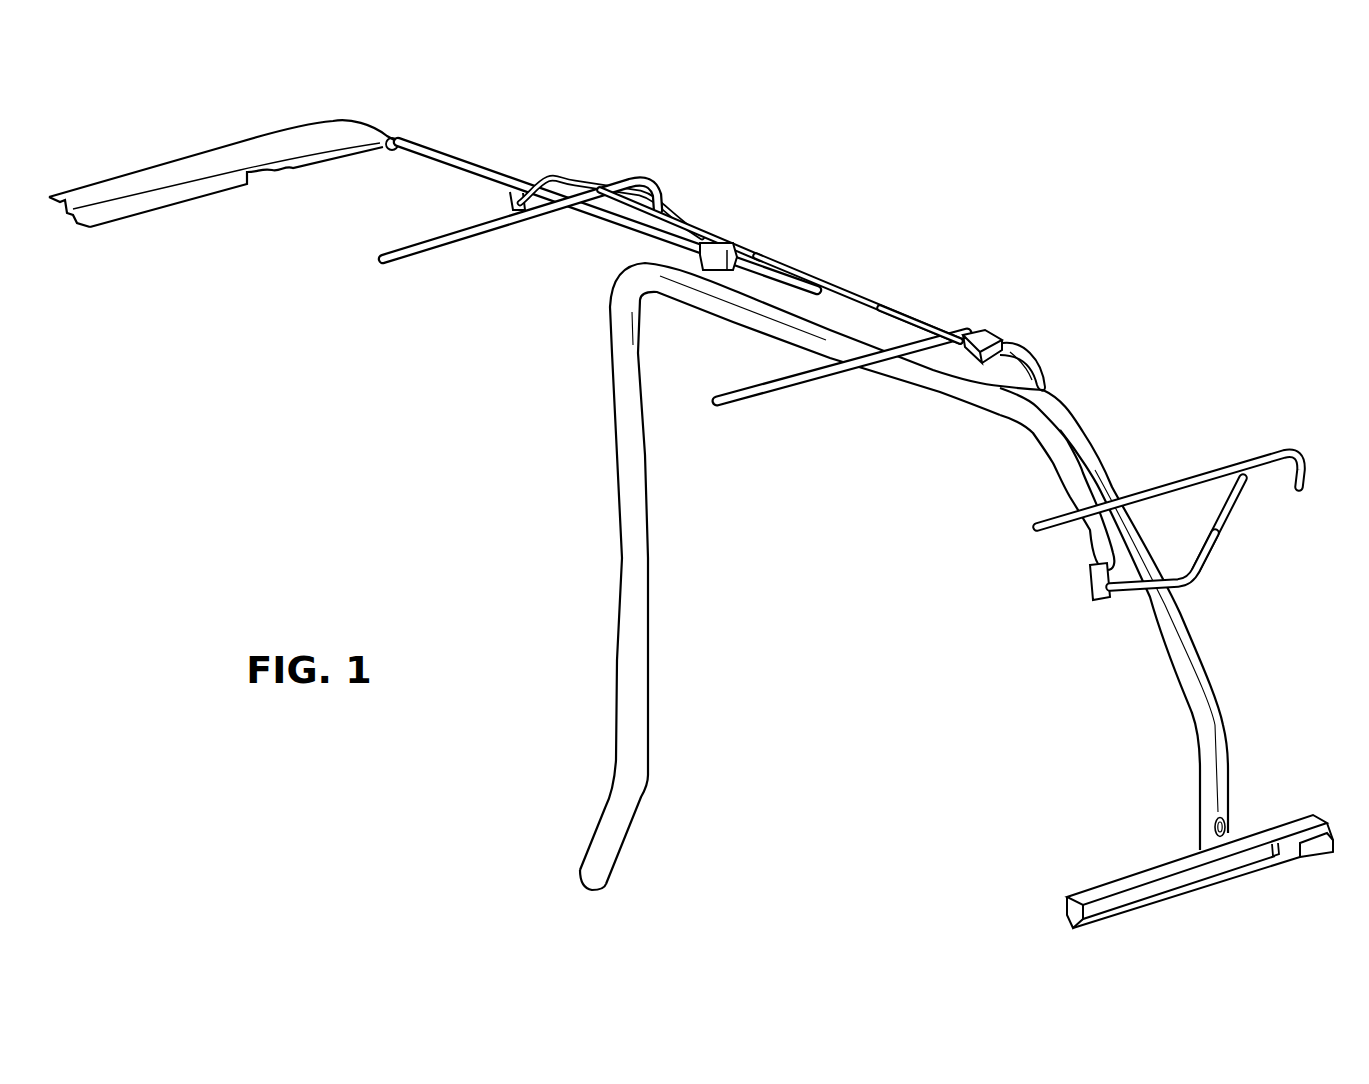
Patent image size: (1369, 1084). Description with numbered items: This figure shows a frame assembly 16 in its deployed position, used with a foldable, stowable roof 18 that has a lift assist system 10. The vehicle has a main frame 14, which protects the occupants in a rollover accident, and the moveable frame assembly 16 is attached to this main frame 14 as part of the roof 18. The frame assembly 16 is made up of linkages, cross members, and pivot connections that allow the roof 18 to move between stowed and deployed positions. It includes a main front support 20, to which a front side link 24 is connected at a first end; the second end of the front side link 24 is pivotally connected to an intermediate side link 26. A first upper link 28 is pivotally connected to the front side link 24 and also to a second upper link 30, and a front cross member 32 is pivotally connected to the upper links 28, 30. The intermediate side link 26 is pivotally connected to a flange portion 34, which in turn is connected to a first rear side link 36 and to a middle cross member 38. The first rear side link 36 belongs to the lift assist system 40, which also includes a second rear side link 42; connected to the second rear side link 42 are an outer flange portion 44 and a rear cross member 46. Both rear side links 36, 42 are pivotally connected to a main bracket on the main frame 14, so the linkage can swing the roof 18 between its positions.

The lift assist system 10 is at (1085, 298).
The main frame 14 is at (622, 600).
The frame assembly 16 is at (733, 230).
The roof 18 is at (870, 291).
The main front support 20 is at (143, 213).
The front side link 24 is at (478, 158).
The intermediate side link 26 is at (903, 307).
The first upper link 28 is at (598, 181).
The second upper link 30 is at (680, 207).
The front cross member 32 is at (417, 257).
The flange portion 34 is at (1027, 365).
The first rear side link 36 is at (1043, 453).
The middle cross member 38 is at (745, 407).
The lift assist system 40 is at (1097, 593).
The second rear side link 42 is at (1210, 553).
The outer flange portion 44 is at (1223, 507).
The rear cross member 46 is at (1177, 487).